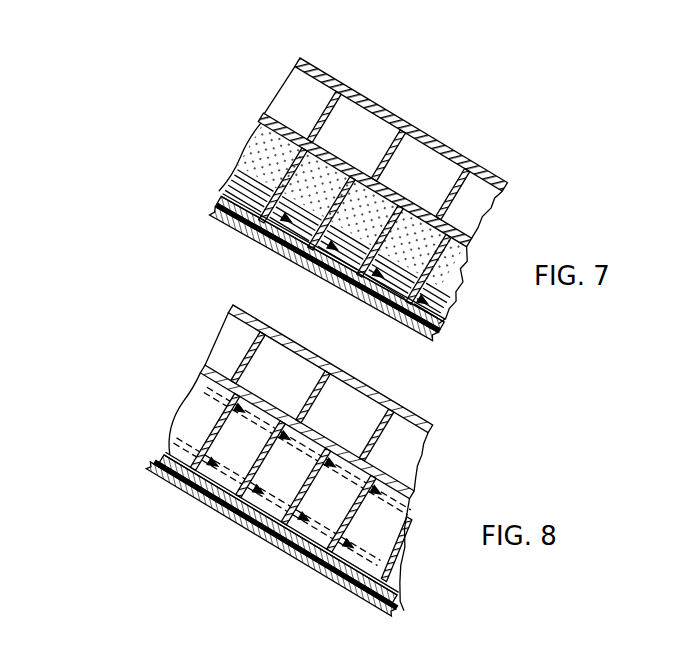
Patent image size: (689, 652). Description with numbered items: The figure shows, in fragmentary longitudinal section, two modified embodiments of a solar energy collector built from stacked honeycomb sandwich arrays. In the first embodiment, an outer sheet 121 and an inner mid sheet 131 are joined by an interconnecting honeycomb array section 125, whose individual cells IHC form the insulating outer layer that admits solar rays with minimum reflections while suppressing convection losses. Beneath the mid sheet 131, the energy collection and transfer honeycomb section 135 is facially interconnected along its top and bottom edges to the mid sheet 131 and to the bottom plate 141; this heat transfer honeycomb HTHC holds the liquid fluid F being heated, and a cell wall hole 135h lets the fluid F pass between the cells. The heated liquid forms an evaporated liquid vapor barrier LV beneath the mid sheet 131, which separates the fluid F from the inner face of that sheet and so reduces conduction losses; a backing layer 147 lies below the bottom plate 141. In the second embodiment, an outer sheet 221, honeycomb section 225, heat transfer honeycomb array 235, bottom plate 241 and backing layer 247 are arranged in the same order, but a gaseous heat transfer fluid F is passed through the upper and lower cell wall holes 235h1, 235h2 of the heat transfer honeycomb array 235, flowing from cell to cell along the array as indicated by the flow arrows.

In FIG. 7, the outer sheet, plate or panel 121 is at (387, 130).
In FIG. 7, the interconnecting honeycomb array section 125 is at (308, 114).
In FIG. 7, the inner sheet, panel or plate 131 is at (278, 102).
In FIG. 7, the honeycomb section 135 is at (262, 152).
In FIG. 7, the cell wall hole 135h is at (258, 222).
In FIG. 7, the bottom plate, sheet, or panel 141 is at (324, 270).
In FIG. 7, the insulating base layer 147 is at (282, 245).
In FIG. 7, the high temperature heat carrier HTHC is at (267, 116).
In FIG. 7, the cell IHC is at (423, 157).
In FIG. 7, the evaporated liquid vapor barrier LV is at (452, 271).
In FIG. 7, the fluid F is at (378, 305).
In FIG. 8, the fluid F is at (215, 497).
In FIG. 8, the outer sheet, plate or panel 221 is at (416, 412).
In FIG. 8, the interconnecting honeycomb array section 225 is at (243, 338).
In FIG. 8, the heat transfer honeycomb array 235 is at (400, 532).
In FIG. 8, the upper cell wall hole 235h1 is at (212, 460).
In FIG. 8, the lower cell wall hole 235h2 is at (240, 400).
In FIG. 8, the bottom plate, sheet, or panel 241 is at (300, 570).
In FIG. 8, the insulating base layer 247 is at (175, 478).